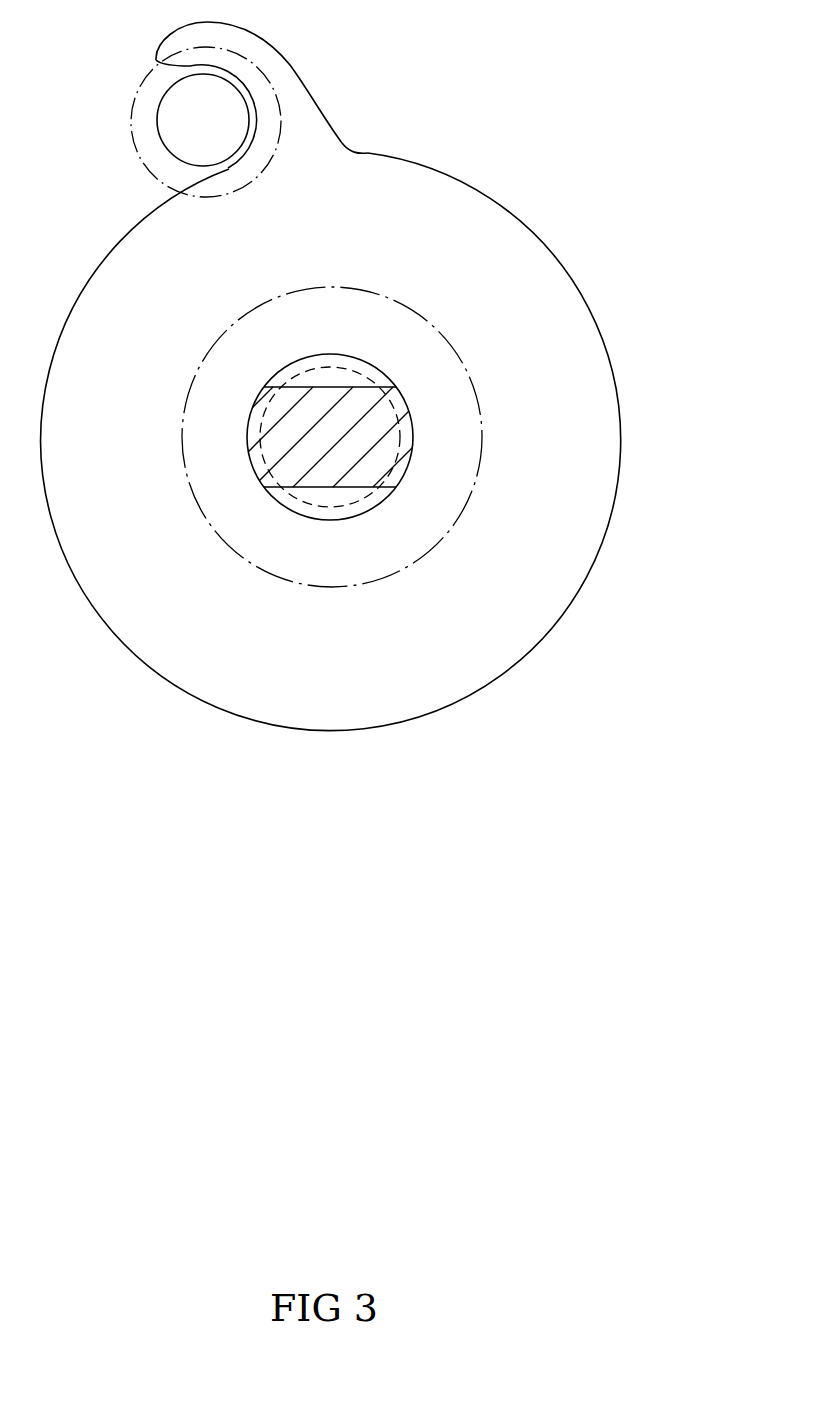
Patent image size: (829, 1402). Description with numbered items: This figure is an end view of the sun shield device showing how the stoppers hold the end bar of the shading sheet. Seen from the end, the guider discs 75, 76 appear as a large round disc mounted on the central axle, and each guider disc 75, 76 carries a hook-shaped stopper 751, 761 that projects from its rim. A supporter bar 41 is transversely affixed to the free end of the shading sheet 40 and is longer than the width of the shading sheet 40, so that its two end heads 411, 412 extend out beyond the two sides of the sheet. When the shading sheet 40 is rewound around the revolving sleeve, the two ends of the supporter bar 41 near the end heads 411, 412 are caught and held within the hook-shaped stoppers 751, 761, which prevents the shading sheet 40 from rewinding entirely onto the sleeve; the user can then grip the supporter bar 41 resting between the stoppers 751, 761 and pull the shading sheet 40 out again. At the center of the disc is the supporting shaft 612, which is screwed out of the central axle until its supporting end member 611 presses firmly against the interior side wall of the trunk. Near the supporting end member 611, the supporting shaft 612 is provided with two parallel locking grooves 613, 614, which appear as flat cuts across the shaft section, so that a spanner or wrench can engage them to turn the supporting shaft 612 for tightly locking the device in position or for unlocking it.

The guider disc 75 is at (345, 442).
The guider disc 76 is at (452, 646).
The hook-shaped stopper 751 is at (304, 87).
The hook-shaped stopper 761 is at (257, 60).
The end head 411 is at (336, 122).
The end head 412 is at (280, 118).
The supporter bar 41 is at (162, 112).
The shading sheet 40 is at (245, 155).
The supporting end member 611 is at (470, 500).
The supporting shaft 612 is at (413, 415).
The locking groove 613 is at (337, 384).
The locking groove 614 is at (310, 488).